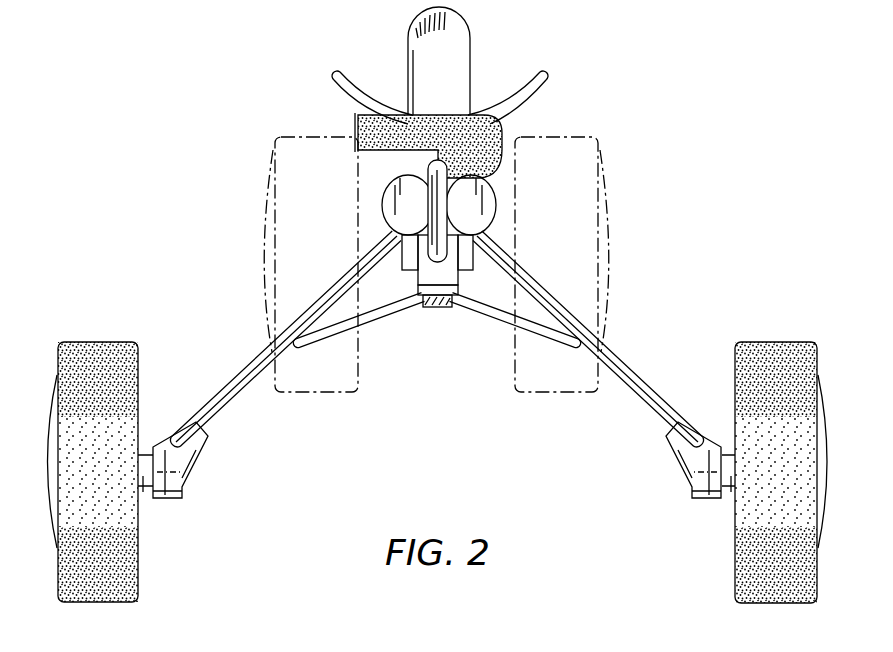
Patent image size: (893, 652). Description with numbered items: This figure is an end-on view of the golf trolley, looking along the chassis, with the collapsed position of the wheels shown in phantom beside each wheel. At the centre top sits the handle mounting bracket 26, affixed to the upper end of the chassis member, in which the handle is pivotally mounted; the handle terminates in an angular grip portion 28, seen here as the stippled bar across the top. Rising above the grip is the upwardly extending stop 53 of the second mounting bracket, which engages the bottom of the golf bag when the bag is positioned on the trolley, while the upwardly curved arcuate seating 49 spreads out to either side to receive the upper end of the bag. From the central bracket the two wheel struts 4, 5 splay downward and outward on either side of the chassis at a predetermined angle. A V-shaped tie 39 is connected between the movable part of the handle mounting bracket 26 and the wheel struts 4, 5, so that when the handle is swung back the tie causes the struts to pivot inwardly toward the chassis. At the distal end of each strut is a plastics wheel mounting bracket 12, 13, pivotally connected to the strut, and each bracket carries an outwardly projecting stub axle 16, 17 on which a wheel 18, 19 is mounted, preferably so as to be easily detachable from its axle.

The wheel strut 4 is at (232, 382).
The wheel strut 5 is at (644, 386).
The wheel mounting bracket 12 is at (200, 462).
The wheel mounting bracket 13 is at (672, 462).
The stub axle 16 is at (145, 488).
The stub axle 17 is at (730, 488).
The wheel 18 is at (105, 342).
The wheel 19 is at (778, 342).
The handle mounting bracket 26 is at (435, 320).
The angular grip portion 28 is at (505, 126).
The V-shaped tie 39 is at (494, 311).
The arcuate seating 49 is at (347, 72).
The stop 53 is at (458, 42).